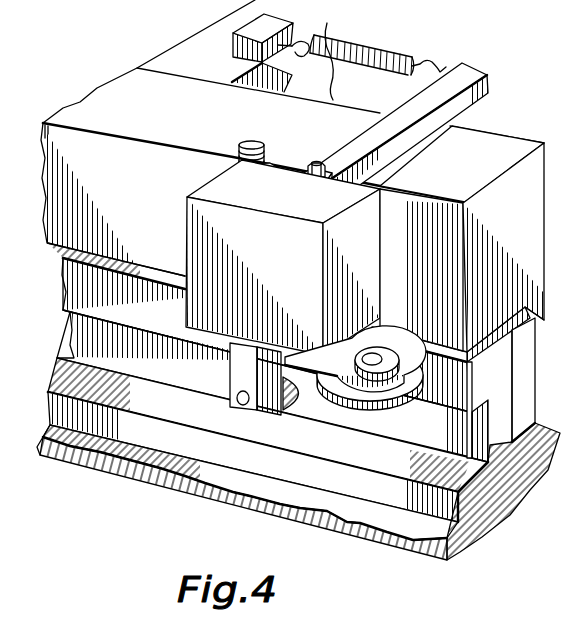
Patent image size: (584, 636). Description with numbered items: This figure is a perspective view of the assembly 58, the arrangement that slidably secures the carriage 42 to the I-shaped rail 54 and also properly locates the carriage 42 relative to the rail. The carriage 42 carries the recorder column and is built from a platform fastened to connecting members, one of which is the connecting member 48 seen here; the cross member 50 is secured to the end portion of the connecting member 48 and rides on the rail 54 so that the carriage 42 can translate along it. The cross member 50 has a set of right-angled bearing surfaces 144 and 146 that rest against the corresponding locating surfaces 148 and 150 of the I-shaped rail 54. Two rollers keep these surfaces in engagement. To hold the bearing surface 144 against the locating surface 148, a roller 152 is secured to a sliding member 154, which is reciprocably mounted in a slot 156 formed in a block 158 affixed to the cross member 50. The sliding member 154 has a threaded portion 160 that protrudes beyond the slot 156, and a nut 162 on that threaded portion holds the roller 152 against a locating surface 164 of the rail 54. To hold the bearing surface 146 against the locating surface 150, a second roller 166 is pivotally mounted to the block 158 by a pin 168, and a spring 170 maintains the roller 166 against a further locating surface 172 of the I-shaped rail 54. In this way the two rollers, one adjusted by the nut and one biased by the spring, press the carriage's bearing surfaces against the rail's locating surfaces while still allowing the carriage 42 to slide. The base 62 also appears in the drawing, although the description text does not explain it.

The carriage 42 is at (534, 119).
The connecting member 48 is at (192, 46).
The cross member 50 is at (544, 146).
The I-shaped rail 54 is at (518, 407).
The assembly 58 is at (150, 230).
The base 62 is at (478, 538).
The bearing surface 144 is at (502, 313).
The bearing surface 146 is at (528, 305).
The locating surface 148 is at (483, 349).
The locating surface 150 is at (525, 348).
The roller 152 is at (303, 408).
The sliding member 154 is at (230, 379).
The slot 156 is at (298, 180).
The block 158 is at (197, 256).
The threaded portion 160 is at (248, 142).
The nut 162 is at (228, 176).
The locating surface 164 is at (465, 427).
The roller 166 is at (400, 392).
The pin 168 is at (318, 161).
The spring 170 is at (379, 58).
The locating surface 172 is at (462, 384).